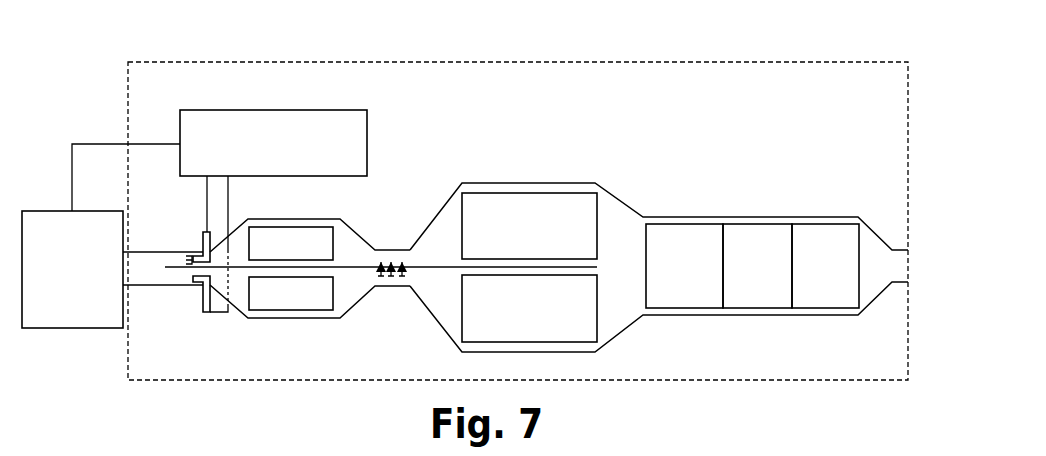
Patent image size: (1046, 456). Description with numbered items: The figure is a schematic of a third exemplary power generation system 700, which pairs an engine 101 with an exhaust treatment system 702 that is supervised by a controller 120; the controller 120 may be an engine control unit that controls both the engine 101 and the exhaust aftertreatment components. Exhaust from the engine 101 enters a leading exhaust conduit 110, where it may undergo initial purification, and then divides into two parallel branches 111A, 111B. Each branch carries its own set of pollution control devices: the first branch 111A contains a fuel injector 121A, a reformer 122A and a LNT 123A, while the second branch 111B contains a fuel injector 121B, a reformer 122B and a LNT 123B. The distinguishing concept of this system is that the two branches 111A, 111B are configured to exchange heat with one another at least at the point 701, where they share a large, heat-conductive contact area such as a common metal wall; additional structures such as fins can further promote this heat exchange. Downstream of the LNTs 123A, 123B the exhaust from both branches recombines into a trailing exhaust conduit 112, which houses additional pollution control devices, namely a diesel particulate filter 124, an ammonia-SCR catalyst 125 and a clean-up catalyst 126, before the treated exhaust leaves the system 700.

The power generation system 700 is at (104, 84).
The exhaust treatment system 702 is at (638, 72).
The engine 101 is at (98, 318).
The controller 120 is at (360, 138).
The leading exhaust conduit 110 is at (138, 268).
The fuel injector 121A is at (205, 232).
The fuel injector 121B is at (203, 303).
The branch 111A is at (243, 212).
The branch 111B is at (242, 325).
The reformer 122A is at (323, 232).
The reformer 122B is at (317, 305).
The point 701 is at (398, 240).
The LNT 123A is at (552, 202).
The LNT 123B is at (565, 332).
The trailing exhaust conduit 112 is at (737, 312).
The diesel particulate filter 124 is at (708, 233).
The ammonia-SCR catalyst 125 is at (777, 233).
The clean-up catalyst 126 is at (837, 233).